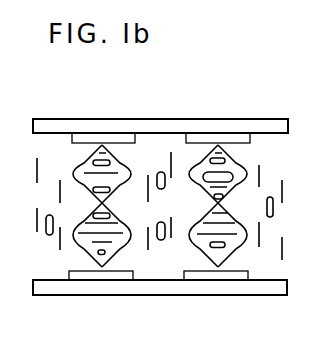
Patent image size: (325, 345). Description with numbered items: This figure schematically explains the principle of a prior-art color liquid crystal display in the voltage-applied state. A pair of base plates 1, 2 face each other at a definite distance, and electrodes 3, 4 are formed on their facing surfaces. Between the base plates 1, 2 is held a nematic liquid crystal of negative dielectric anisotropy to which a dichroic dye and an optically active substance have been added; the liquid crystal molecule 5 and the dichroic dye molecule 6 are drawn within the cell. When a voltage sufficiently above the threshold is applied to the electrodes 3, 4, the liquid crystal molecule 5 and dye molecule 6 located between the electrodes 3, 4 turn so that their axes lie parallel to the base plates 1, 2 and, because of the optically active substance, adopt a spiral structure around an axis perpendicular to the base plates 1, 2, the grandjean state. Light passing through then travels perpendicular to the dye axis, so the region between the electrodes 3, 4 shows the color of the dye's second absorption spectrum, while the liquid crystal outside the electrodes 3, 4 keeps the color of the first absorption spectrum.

The base plate 1 is at (258, 127).
The base plate 2 is at (168, 290).
The electrode 3 is at (85, 139).
The electrode 4 is at (92, 277).
The liquid crystal molecule 5 is at (232, 236).
The dichroic dye molecule 6 is at (232, 174).